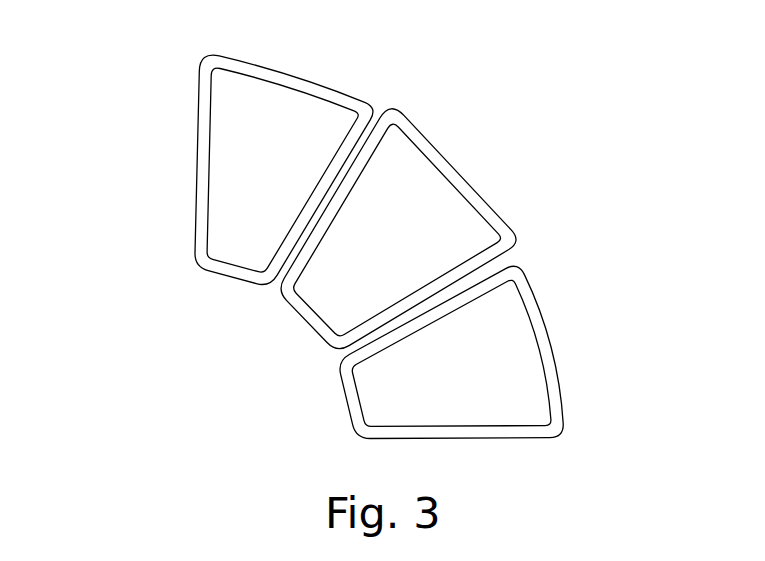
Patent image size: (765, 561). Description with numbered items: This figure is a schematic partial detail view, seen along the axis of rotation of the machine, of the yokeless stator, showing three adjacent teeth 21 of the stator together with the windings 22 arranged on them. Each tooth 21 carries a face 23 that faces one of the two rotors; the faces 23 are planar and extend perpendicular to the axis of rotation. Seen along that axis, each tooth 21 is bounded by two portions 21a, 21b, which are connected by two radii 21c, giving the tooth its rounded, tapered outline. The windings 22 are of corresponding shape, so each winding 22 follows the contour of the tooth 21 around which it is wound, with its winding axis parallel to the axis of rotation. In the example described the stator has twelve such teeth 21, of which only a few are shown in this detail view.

The tooth 21 is at (232, 97).
The portion 21a is at (297, 78).
The portion 21b is at (233, 265).
The radius 21c is at (327, 168).
The winding 22 is at (343, 97).
The face 23 is at (410, 259).